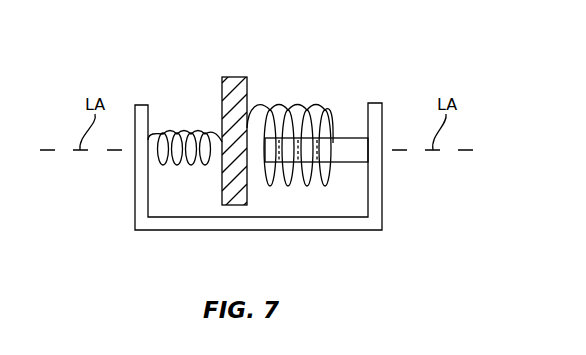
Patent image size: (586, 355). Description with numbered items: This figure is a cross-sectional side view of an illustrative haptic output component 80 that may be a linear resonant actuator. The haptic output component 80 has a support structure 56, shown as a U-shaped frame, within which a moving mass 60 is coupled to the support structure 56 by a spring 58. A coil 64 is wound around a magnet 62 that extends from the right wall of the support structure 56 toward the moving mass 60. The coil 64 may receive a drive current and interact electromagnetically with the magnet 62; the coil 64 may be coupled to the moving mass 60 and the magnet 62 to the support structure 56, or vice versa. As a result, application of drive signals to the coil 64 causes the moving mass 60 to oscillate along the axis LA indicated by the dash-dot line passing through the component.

The support structure 56 is at (135, 193).
The spring 58 is at (184, 133).
The moving mass 60 is at (235, 77).
The magnet 62 is at (350, 163).
The coil 64 is at (290, 187).
The haptic output component 80 is at (359, 66).